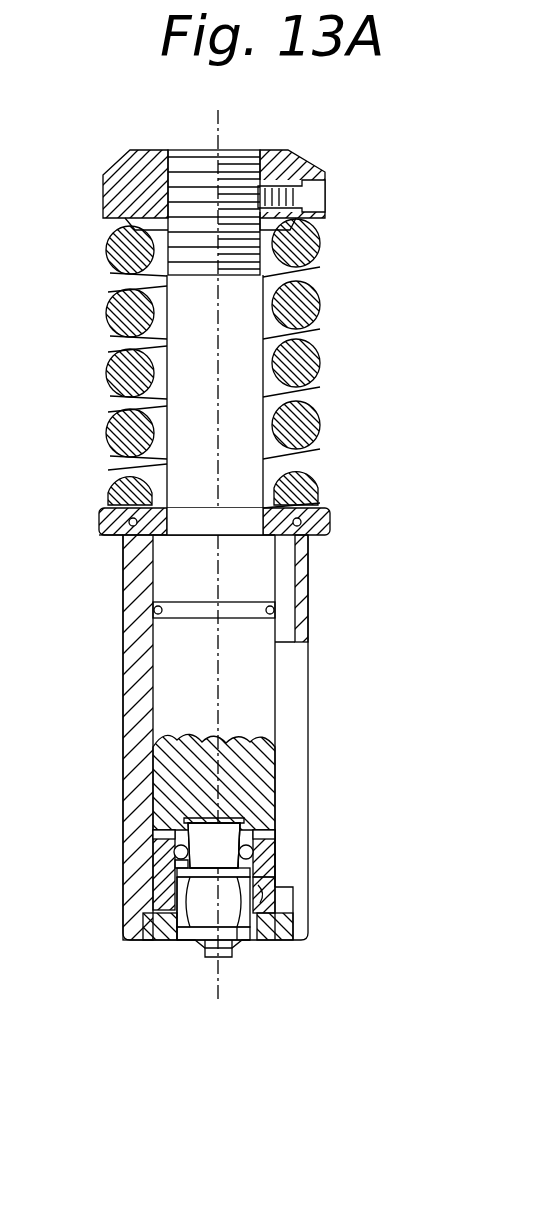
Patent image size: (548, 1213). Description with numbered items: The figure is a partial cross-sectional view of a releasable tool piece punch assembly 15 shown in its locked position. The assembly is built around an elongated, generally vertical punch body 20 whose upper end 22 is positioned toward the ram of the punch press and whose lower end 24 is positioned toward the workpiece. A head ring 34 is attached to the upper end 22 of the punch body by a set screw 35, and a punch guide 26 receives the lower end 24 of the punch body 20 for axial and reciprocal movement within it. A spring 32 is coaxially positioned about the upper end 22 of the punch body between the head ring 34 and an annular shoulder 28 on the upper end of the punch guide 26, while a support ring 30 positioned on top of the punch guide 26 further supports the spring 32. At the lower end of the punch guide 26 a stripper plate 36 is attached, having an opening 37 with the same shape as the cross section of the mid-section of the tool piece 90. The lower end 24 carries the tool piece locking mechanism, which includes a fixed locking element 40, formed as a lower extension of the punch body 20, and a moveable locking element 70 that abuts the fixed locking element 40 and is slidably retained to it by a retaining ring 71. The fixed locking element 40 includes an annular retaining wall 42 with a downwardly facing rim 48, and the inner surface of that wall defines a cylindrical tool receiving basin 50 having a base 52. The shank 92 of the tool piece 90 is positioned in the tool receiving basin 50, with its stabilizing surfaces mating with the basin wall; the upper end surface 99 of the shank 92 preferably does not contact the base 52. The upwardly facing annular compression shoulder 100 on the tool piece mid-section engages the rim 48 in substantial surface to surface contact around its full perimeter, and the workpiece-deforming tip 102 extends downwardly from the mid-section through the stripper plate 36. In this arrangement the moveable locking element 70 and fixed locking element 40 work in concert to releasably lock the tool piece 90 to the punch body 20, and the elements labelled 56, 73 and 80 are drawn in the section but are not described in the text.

The punch assembly 15 is at (78, 437).
The punch body 20 is at (265, 342).
The upper end 22 is at (228, 152).
The lower end 24 is at (296, 848).
The punch guide 26 is at (123, 636).
The annular shoulder 28 is at (332, 522).
The support ring 30 is at (125, 537).
The spring 32 is at (306, 302).
The head ring 34 is at (138, 165).
The set screw 35 is at (322, 190).
The stripper plate 36 is at (162, 942).
The opening 37 is at (205, 950).
The fixed locking element 40 is at (275, 908).
The annular retaining wall 42 is at (256, 832).
The rim 48 is at (274, 943).
The tool receiving basin 50 is at (195, 822).
The base 52 is at (262, 790).
The ball 56 is at (172, 858).
The moveable locking element 70 is at (270, 886).
The retaining ring 71 is at (178, 880).
The retainer 73 is at (140, 850).
The ball 80 is at (255, 848).
The tool piece 90 is at (250, 945).
The shank 92 is at (250, 815).
The upper end surface 99 is at (223, 822).
The compression shoulder 100 is at (186, 942).
The workpiece-deforming tip 102 is at (230, 960).